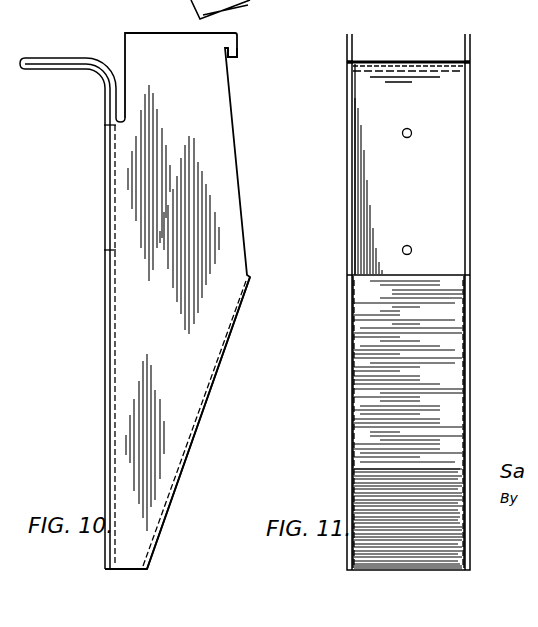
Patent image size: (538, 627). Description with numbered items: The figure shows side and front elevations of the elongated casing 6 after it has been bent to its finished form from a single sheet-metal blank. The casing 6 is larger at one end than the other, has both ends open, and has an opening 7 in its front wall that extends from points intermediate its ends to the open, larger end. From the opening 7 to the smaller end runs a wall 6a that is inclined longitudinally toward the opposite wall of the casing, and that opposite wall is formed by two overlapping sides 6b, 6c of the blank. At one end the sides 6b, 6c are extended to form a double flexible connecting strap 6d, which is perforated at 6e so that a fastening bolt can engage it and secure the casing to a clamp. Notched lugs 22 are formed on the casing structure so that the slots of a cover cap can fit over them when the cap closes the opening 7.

In FIG. 10, the casing 6 is at (215, 327).
In FIG. 11, the casing 6 is at (472, 308).
In FIG. 10, the wall 6a is at (205, 414).
In FIG. 11, the wall 6a is at (455, 418).
In FIG. 10, the side 6b is at (110, 336).
In FIG. 10, the side 6c is at (112, 367).
In FIG. 11, the side 6c is at (370, 181).
In FIG. 10, the connecting strap 6d is at (104, 83).
In FIG. 10, the perforation 6e is at (47, 57).
In FIG. 11, the perforation 6e is at (416, 61).
In FIG. 11, the opening 7 is at (455, 222).
In FIG. 10, the notched lugs 22 is at (238, 52).
In FIG. 11, the notched lugs 22 is at (487, 53).